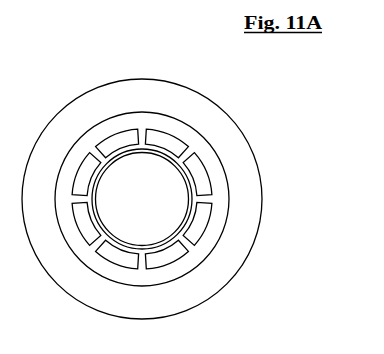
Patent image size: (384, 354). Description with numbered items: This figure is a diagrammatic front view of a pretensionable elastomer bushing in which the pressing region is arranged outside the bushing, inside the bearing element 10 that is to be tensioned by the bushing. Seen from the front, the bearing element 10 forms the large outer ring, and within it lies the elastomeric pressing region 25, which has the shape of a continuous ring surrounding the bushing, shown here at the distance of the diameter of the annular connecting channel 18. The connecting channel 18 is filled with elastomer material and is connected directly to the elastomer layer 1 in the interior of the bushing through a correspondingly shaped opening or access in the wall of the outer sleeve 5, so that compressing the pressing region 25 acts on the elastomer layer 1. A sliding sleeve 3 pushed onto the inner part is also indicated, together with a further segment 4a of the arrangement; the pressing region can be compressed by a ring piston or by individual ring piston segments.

The bearing element 10 is at (152, 78).
The elastomeric pressing region 25 is at (62, 213).
The elastomer layer 1 is at (94, 168).
The outer sleeve 5 is at (167, 142).
The slot segment 4a is at (198, 173).
The annular connecting channel 18 is at (75, 200).
The sliding sleeve 3 is at (69, 282).